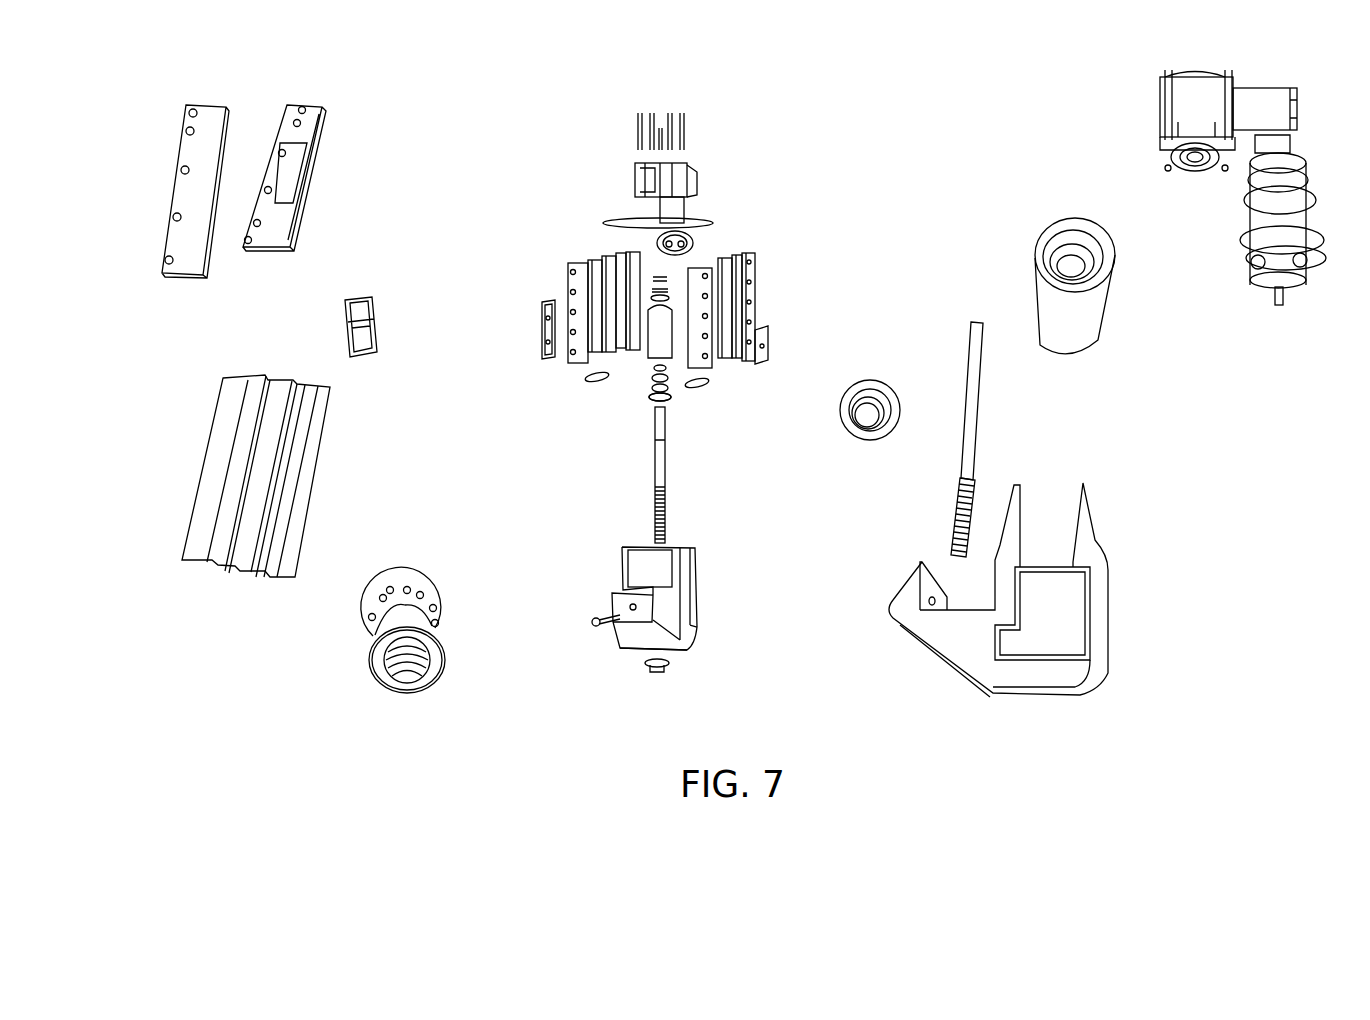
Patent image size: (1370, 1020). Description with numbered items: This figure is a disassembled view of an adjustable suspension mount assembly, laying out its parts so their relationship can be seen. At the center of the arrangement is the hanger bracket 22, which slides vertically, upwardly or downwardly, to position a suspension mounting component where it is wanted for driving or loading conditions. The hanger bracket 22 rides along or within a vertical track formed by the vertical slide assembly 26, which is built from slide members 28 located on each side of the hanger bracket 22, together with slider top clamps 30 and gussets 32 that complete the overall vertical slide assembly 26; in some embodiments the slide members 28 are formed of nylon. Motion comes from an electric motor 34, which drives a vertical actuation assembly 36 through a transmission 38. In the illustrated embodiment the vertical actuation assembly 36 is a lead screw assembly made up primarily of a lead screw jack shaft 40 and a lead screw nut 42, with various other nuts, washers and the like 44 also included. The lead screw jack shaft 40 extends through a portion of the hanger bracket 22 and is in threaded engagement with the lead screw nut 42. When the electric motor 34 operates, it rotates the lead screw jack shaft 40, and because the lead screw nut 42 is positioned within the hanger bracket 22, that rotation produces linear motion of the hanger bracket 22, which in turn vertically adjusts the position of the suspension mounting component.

The hanger bracket 22 is at (673, 630).
The vertical slide assembly 26 is at (757, 248).
The slide members 28 is at (593, 263).
The slider top clamps 30 is at (300, 178).
The gussets 32 is at (358, 300).
The electric motor 34 is at (680, 210).
The vertical actuation assembly 36 is at (626, 376).
The transmission 38 is at (1193, 92).
The lead screw jack shaft 40 is at (663, 473).
The lead screw nut 42 is at (418, 593).
The nuts, washers and the like 44 is at (673, 397).